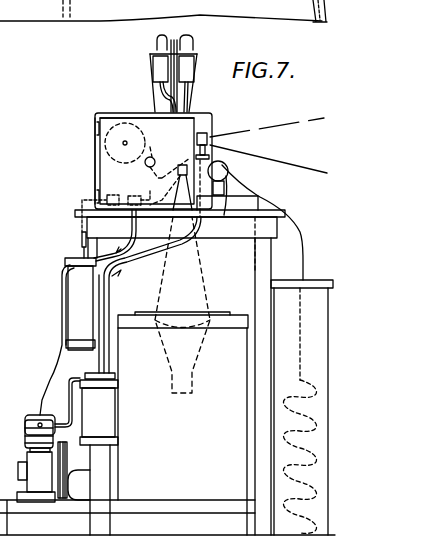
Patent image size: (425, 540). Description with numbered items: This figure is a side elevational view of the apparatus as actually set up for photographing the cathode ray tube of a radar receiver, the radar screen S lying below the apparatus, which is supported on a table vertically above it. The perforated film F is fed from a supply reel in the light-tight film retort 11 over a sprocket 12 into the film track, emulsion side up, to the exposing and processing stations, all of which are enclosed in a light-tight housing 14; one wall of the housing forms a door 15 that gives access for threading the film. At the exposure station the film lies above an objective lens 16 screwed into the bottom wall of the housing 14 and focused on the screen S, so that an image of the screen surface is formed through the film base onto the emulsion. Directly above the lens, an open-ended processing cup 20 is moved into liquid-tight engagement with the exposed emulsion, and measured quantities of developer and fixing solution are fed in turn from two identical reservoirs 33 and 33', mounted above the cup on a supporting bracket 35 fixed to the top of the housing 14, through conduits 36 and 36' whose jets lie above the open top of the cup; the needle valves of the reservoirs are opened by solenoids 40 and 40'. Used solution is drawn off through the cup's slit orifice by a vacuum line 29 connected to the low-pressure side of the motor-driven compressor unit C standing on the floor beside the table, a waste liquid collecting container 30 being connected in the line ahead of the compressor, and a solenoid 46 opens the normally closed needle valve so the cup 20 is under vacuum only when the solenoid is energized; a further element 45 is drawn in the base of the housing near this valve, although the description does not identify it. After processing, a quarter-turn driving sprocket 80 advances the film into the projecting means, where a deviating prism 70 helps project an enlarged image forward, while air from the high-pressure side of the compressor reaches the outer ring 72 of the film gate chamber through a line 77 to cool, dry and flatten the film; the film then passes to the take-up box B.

The light-tight film retort 11 is at (115, 128).
The sprocket 12 is at (151, 157).
The light-tight housing 14 is at (145, 113).
The door 15 is at (96, 161).
The objective lens 16 is at (143, 240).
The processing cup 20 is at (183, 163).
The vacuum line 29 is at (150, 202).
The waste liquid collecting container 30 is at (80, 304).
The reservoir 33 is at (144, 81).
The reservoir 33' is at (202, 76).
The supporting bracket 35 is at (157, 44).
The conduit 36 is at (148, 89).
The conduit 36' is at (203, 96).
The solenoid 40 is at (155, 35).
The solenoid 40' is at (192, 35).
The switch 45 is at (128, 198).
The solenoid 46 is at (97, 205).
The deviating prism 70 is at (210, 135).
The outer ring 72 is at (214, 156).
The line 77 is at (132, 262).
The driving sprocket 80 is at (203, 238).
The take-up box B is at (302, 407).
The compressor unit C is at (22, 444).
The perforated film F is at (304, 246).
The radar screen S is at (196, 362).